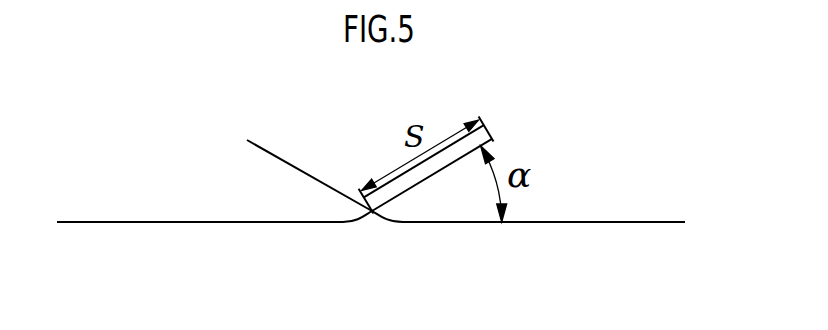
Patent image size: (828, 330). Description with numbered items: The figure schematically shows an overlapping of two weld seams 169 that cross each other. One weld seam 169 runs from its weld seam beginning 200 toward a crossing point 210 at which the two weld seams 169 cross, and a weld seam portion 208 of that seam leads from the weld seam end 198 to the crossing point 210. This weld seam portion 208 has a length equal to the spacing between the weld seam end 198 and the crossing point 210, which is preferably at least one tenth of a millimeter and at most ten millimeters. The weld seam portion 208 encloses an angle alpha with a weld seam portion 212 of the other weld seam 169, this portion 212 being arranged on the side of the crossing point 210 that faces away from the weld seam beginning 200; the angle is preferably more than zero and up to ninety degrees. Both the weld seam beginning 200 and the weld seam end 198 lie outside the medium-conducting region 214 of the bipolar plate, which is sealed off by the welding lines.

The weld seam 169 is at (113, 221).
The weld seam end 198 is at (496, 140).
The weld seam beginning 200 is at (247, 140).
The weld seam portion 208 is at (434, 178).
The crossing point 210 is at (372, 213).
The weld seam portion 212 is at (550, 222).
The medium-conducting region 214 is at (302, 303).